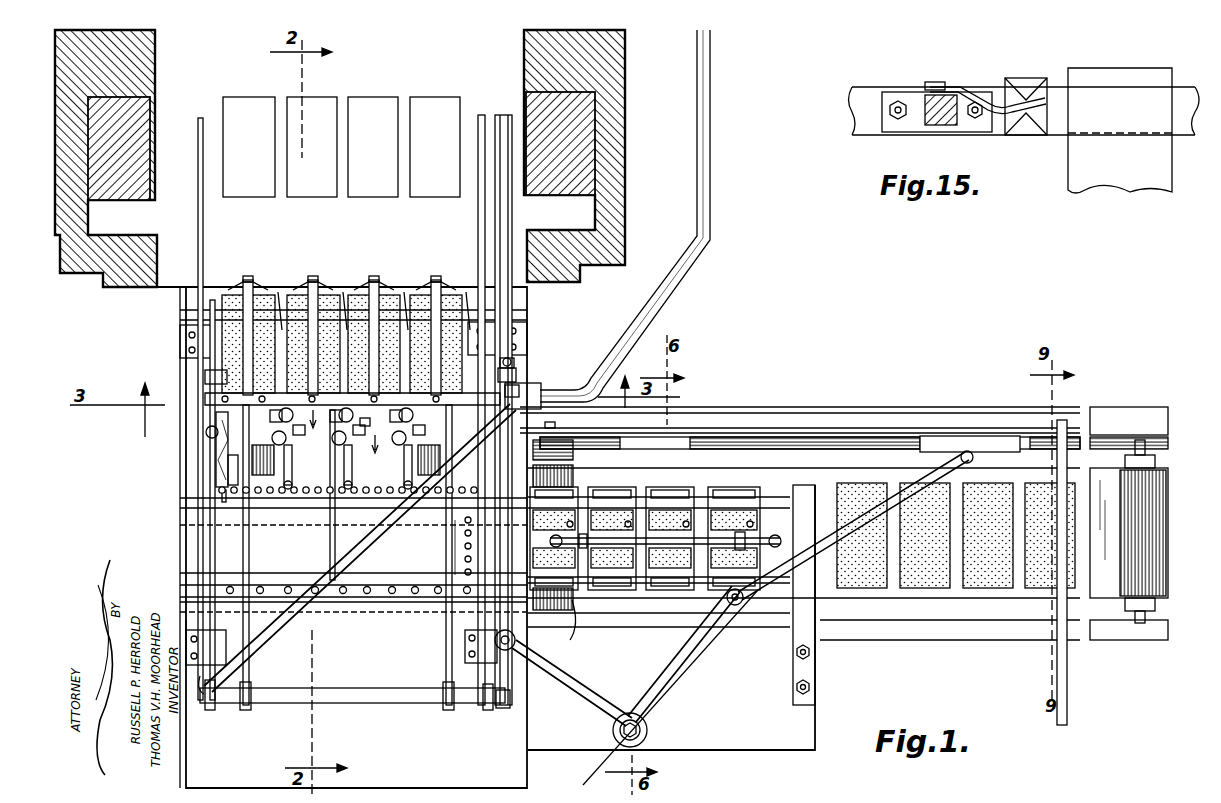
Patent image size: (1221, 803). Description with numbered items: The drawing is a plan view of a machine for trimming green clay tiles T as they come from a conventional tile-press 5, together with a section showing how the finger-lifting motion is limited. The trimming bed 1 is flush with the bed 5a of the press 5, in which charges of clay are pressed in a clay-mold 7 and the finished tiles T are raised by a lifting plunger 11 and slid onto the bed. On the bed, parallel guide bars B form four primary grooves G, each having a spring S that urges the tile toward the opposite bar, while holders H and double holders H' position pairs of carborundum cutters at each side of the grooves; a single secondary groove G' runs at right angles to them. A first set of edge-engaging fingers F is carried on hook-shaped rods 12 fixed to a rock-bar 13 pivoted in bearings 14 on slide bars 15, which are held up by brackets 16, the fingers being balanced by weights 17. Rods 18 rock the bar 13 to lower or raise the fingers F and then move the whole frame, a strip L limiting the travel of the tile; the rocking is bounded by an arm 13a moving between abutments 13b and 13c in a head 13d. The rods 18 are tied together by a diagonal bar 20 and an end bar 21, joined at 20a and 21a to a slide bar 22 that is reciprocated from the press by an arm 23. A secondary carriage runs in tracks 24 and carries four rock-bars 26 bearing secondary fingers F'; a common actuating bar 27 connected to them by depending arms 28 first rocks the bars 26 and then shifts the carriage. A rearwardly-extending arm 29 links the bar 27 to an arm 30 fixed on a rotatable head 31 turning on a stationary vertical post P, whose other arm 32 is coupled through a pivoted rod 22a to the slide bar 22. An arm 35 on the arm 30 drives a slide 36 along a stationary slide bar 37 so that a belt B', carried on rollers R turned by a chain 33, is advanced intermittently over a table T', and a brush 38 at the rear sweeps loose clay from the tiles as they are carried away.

In FIG. 1, the trimming bed 1 is at (356, 500).
In FIG. 1, the tile-press 5 is at (600, 268).
In FIG. 1, the bed of the tile-press 5a is at (162, 283).
In FIG. 1, the clay-mold 7 is at (262, 197).
In FIG. 1, the lifting plunger 11 is at (341, 147).
In FIG. 1, the hook-shaped rods 12 is at (255, 305).
In FIG. 1, the rock-bar 13 is at (375, 418).
In FIG. 15, the rock-bar 13 is at (925, 122).
In FIG. 15, the arm 13a is at (975, 95).
In FIG. 15, the abutment 13b is at (1028, 135).
In FIG. 15, the abutment 13c is at (1030, 95).
In FIG. 15, the head 13d is at (1050, 110).
In FIG. 1, the bearings 14 is at (516, 374).
In FIG. 1, the slide bars 15 is at (317, 585).
In FIG. 15, the slide bars 15 is at (865, 110).
In FIG. 1, the brackets 16 is at (196, 632).
In FIG. 15, the brackets 16 is at (1120, 130).
In FIG. 1, the weights 17 is at (262, 475).
In FIG. 1, the rods 18 is at (336, 572).
In FIG. 1, the diagonal bar 20 is at (268, 622).
In FIG. 1, the connection 20a is at (515, 362).
In FIG. 1, the end bar 21 is at (362, 698).
In FIG. 1, the connection 21a is at (495, 708).
In FIG. 1, the slide bar 22 is at (505, 680).
In FIG. 1, the pivoted rod 22a is at (556, 425).
In FIG. 1, the arm 23 is at (680, 297).
In FIG. 1, the tracks 24 is at (330, 505).
In FIG. 1, the rock-bars 26 is at (670, 522).
In FIG. 1, the actuating bar 27 is at (742, 592).
In FIG. 1, the depending arms 28 is at (742, 500).
In FIG. 1, the rearwardly-extending arm 29 is at (628, 590).
In FIG. 1, the arm 30 is at (672, 662).
In FIG. 1, the rotatable head 31 is at (648, 738).
In FIG. 1, the arm 32 is at (570, 695).
In FIG. 1, the chain 33 is at (790, 440).
In FIG. 1, the arm 35 is at (830, 530).
In FIG. 1, the slide 36 is at (960, 440).
In FIG. 1, the stationary slide bar 37 is at (905, 440).
In FIG. 1, the brush 38 is at (1058, 590).
In FIG. 1, the guide bars B is at (288, 448).
In FIG. 1, the belt B' is at (660, 490).
In FIG. 1, the edge-engaging fingers F is at (339, 323).
In FIG. 1, the edge-engaging fingers F' is at (645, 536).
In FIG. 1, the primary grooves G is at (344, 437).
In FIG. 1, the secondary groove G' is at (429, 546).
In FIG. 1, the holders H is at (358, 405).
In FIG. 1, the double holders H' is at (374, 290).
In FIG. 1, the strip L is at (362, 603).
In FIG. 1, the stationary vertical post P is at (366, 630).
In FIG. 1, the rollers R is at (568, 626).
In FIG. 1, the spring S is at (225, 496).
In FIG. 1, the green tile T is at (592, 451).
In FIG. 1, the table T' is at (956, 579).